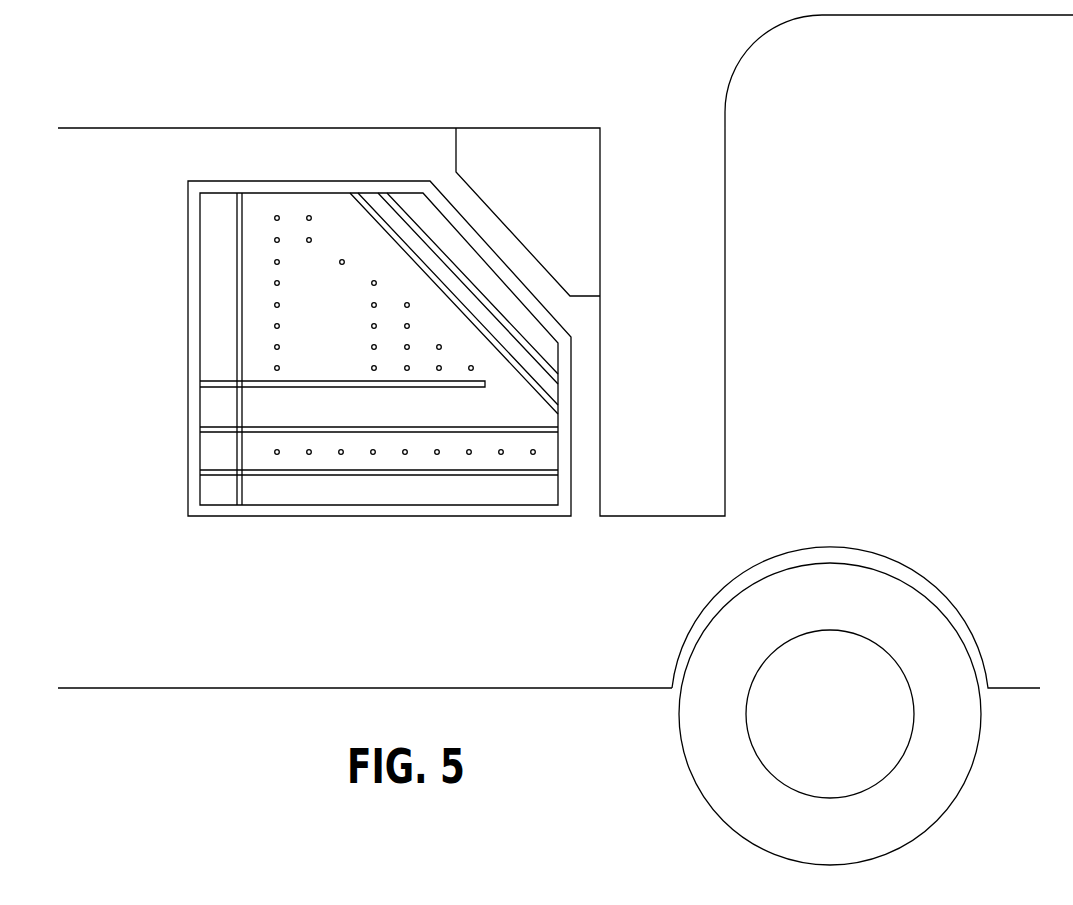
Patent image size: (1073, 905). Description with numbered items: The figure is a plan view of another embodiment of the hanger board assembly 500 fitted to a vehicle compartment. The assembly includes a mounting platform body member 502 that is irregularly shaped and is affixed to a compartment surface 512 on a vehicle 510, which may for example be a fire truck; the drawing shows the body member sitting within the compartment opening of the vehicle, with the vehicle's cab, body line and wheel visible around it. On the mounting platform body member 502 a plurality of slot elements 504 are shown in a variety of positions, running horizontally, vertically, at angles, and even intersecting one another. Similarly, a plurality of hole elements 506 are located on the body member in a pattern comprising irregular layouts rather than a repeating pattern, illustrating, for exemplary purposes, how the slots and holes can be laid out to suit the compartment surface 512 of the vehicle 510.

The hanger board assembly 500 is at (565, 440).
The mounting platform body member 502 is at (343, 341).
The slot elements 504 is at (240, 214).
The hole elements 506 is at (280, 242).
The vehicle 510 is at (365, 630).
The compartment surface 512 is at (188, 296).